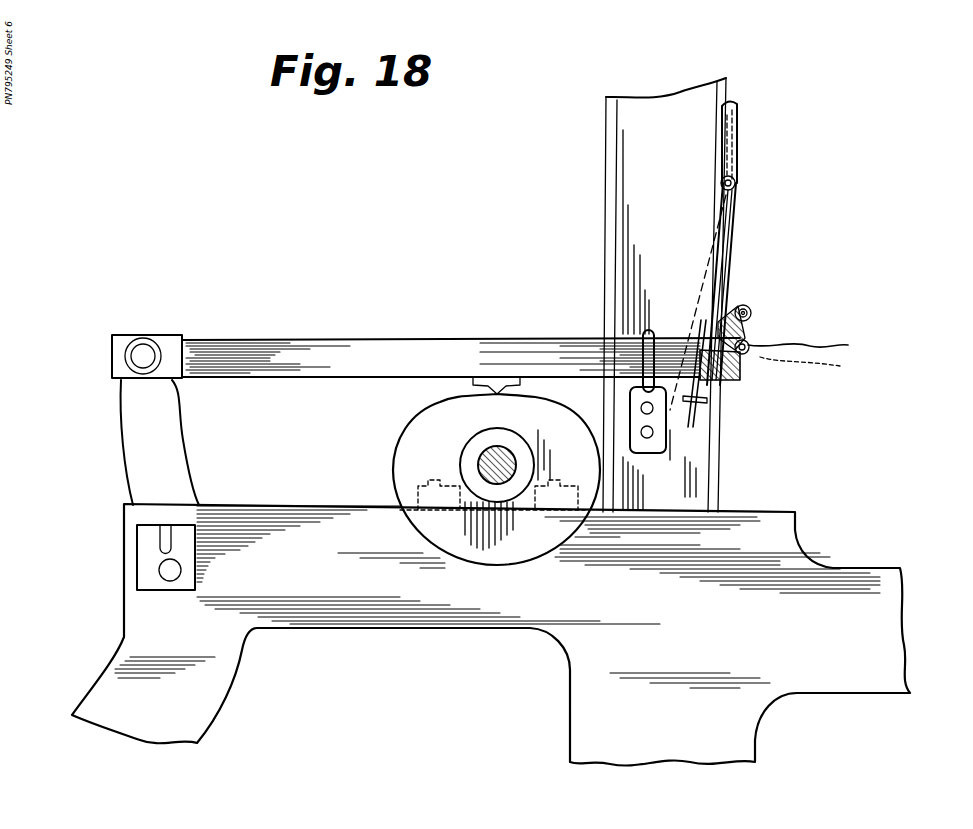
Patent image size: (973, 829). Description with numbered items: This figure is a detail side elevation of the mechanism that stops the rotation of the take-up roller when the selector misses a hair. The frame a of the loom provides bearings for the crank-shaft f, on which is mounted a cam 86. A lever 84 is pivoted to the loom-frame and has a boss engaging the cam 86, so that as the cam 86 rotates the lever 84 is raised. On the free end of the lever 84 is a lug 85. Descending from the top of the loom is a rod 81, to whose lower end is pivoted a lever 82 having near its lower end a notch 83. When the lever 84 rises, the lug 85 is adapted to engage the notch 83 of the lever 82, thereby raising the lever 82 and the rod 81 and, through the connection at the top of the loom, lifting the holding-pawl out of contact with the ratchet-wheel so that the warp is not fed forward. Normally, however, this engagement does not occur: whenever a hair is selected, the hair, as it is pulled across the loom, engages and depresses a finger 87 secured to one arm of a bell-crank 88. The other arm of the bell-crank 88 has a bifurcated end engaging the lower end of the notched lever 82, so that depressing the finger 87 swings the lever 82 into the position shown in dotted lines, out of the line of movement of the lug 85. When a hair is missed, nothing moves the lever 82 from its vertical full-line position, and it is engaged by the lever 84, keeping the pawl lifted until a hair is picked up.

The frame a is at (607, 190).
The rod 81 is at (738, 126).
The lever 82 is at (733, 262).
The notch 83 is at (706, 300).
The lever 84 is at (310, 340).
The lug 85 is at (697, 335).
The cam 86 is at (408, 430).
The finger 87 is at (850, 343).
The bell-crank 88 is at (752, 312).
The crank-shaft f is at (478, 465).